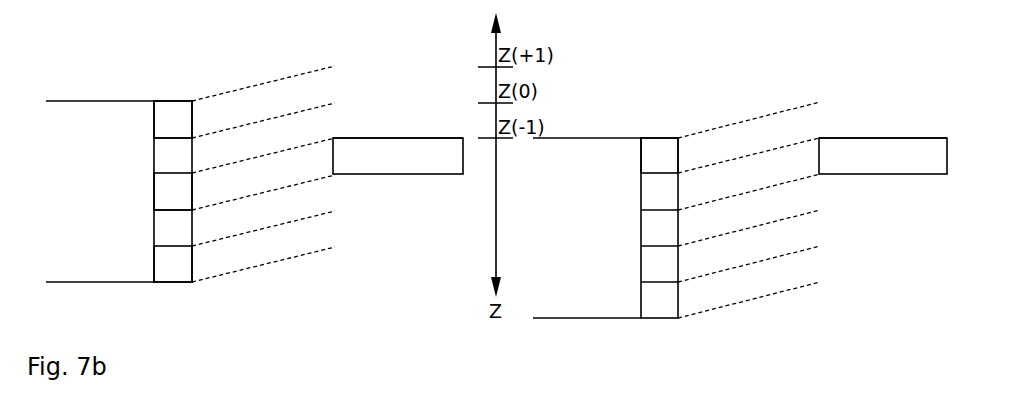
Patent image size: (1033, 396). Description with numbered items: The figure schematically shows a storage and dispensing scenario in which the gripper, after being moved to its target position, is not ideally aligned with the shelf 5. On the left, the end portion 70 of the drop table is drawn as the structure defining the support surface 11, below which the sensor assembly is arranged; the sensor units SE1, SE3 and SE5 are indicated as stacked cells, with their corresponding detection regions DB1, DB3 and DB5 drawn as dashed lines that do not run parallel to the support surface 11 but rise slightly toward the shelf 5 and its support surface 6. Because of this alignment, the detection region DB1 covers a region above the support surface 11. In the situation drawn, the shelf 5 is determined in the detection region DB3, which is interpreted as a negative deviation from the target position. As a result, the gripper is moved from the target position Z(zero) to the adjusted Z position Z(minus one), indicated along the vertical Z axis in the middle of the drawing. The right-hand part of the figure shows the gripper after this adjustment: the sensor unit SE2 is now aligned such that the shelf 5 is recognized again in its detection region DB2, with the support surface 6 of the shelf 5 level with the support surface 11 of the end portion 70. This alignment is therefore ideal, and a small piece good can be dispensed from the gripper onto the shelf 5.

The support surface 11 is at (98, 101).
The end portion 70 is at (98, 192).
The first sensor unit SE1 is at (172, 120).
The second sensor unit SE2 is at (658, 192).
The third sensor unit SE3 is at (173, 192).
The fifth sensor unit SE5 is at (172, 265).
The first detection region DB1 is at (260, 103).
The second detection region DB2 is at (748, 173).
The third detection region DB3 is at (260, 175).
The fifth detection region DB5 is at (260, 247).
The shelf 5 is at (393, 138).
The support surface of the shelf 6 is at (352, 138).